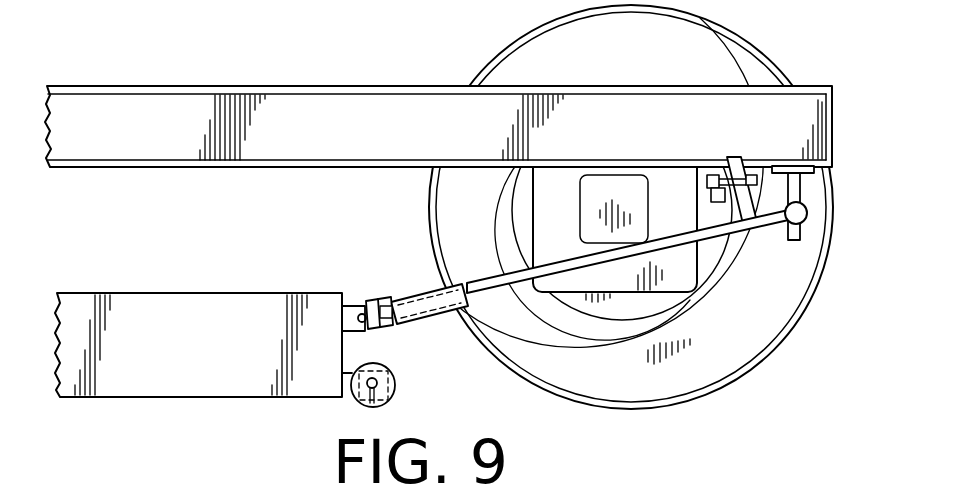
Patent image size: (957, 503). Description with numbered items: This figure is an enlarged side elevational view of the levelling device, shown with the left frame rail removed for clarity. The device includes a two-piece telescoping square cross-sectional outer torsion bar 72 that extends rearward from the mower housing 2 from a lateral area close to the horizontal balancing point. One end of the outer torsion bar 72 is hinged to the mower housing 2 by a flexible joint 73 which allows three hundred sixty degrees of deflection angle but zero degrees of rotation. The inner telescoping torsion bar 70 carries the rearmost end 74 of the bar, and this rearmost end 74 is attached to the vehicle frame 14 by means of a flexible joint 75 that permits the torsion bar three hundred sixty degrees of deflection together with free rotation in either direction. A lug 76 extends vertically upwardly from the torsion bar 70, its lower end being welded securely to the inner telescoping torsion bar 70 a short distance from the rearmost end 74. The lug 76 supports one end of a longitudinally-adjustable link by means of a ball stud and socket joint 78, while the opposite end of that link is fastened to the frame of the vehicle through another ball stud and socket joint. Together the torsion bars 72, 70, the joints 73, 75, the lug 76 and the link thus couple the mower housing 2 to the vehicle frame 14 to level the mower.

The mower housing 2 is at (212, 356).
The vehicle frame 14 is at (793, 103).
The inner telescoping torsion bar 70 is at (582, 268).
The outer torsion bar 72 is at (403, 318).
The flexible joint 73 is at (359, 305).
The rearmost end 74 is at (808, 212).
The flexible joint 75 is at (807, 218).
The lug 76 is at (735, 196).
The ball stud and socket joint 78 is at (707, 183).